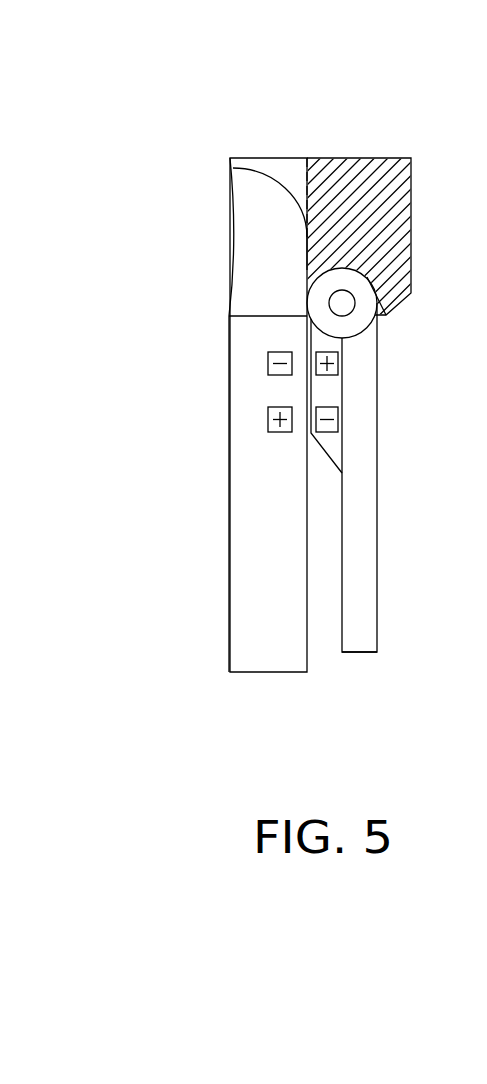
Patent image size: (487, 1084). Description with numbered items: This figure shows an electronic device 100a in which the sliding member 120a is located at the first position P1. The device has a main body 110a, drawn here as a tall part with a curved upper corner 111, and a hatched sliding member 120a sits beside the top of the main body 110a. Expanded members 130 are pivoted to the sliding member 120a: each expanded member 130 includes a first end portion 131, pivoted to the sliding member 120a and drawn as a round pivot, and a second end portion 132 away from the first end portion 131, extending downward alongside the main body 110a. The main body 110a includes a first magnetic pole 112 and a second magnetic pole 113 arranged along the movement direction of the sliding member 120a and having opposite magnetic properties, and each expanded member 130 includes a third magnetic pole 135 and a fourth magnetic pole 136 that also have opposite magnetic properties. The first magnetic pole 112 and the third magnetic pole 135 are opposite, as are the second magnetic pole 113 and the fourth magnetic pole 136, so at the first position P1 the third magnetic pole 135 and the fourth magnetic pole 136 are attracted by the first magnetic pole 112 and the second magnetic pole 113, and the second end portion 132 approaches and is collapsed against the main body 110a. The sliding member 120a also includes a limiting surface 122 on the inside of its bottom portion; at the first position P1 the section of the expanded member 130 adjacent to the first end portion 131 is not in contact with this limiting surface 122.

The electronic device 100a is at (210, 92).
The main body 110a is at (270, 653).
The curved surface portion of first body 111 is at (250, 220).
The first magnetic pole 112 is at (268, 360).
The second magnetic pole 113 is at (268, 420).
The sliding member 120a is at (348, 158).
The limiting surface 122 is at (391, 304).
The expanded members 130 is at (358, 423).
The first end portion 131 is at (354, 329).
The second end portion 132 is at (362, 641).
The third magnetic pole 135 is at (339, 368).
The fourth magnetic pole 136 is at (327, 433).
The first position P1 is at (460, 704).